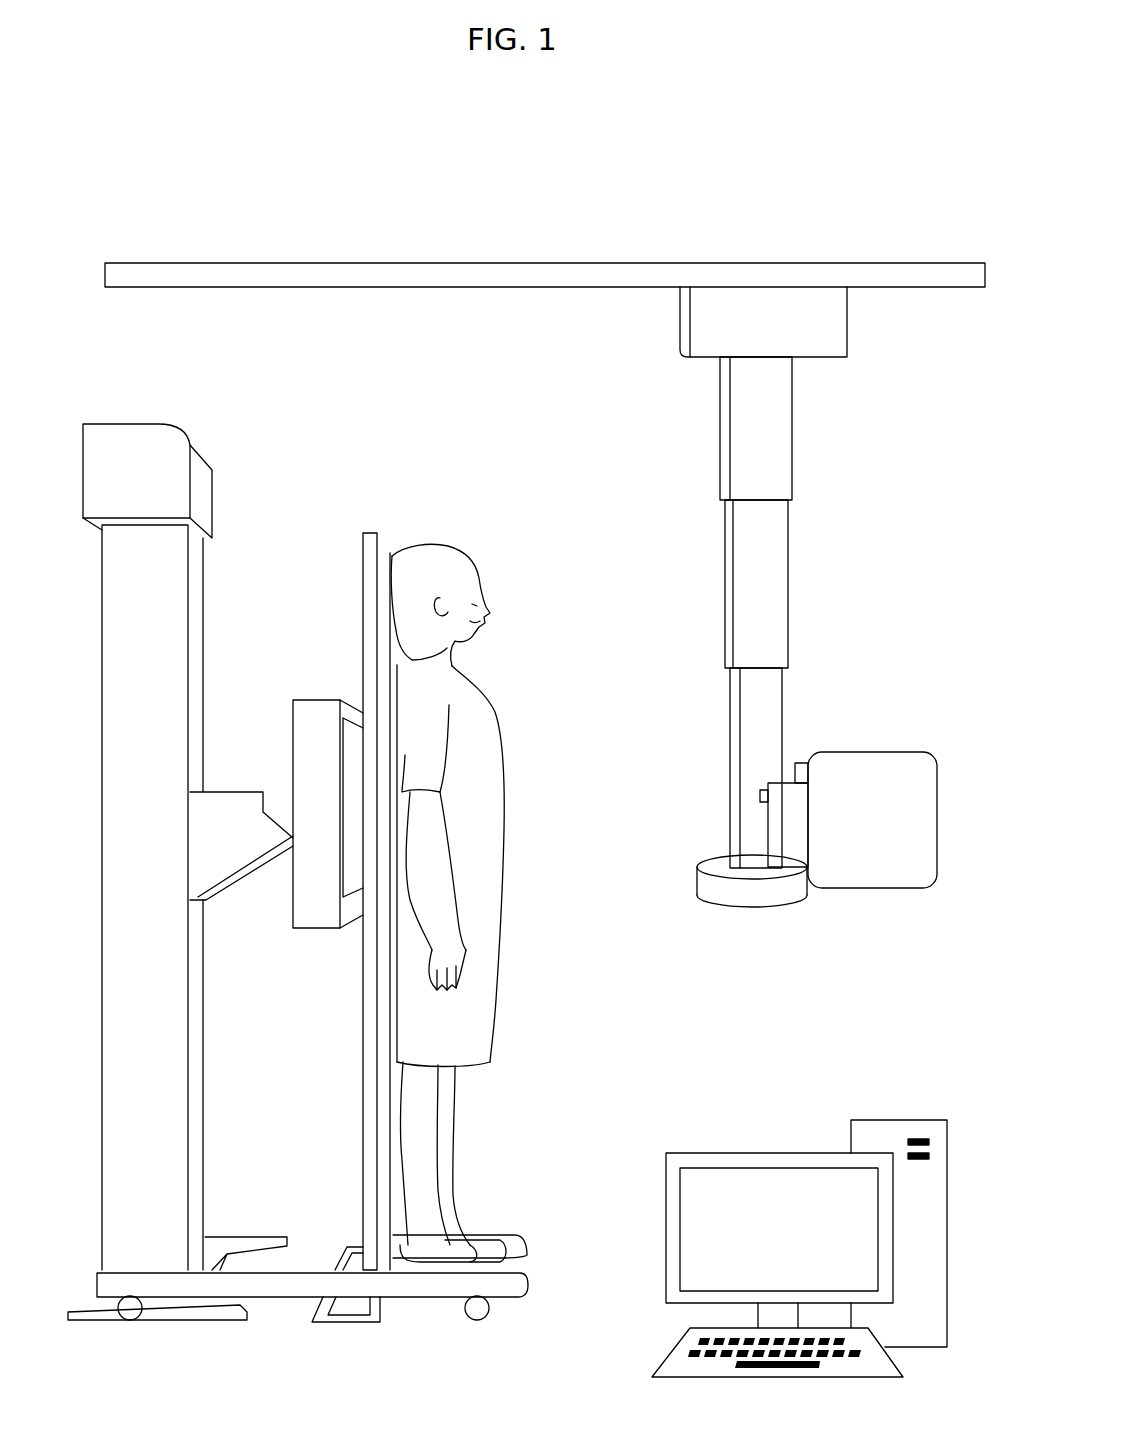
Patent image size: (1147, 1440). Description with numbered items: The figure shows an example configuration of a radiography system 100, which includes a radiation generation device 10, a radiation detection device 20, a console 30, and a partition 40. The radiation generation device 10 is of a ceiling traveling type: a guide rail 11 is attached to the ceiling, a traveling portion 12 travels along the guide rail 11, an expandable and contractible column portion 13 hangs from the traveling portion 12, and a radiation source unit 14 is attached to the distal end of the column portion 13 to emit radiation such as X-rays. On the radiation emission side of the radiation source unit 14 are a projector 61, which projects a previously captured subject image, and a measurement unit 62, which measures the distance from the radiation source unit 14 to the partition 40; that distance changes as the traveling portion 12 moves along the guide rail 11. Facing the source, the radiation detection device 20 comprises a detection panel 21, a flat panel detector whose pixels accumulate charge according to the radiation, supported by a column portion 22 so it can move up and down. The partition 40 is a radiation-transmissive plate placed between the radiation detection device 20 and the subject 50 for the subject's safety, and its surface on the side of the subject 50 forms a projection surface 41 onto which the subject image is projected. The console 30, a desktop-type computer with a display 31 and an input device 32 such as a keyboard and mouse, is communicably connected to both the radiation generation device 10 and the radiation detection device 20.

The radiography system 100 is at (826, 157).
The radiation generation device 10 is at (851, 918).
The guide rail 11 is at (546, 262).
The traveling portion 12 is at (848, 314).
The column portion 13 is at (788, 583).
The radiation source unit 14 is at (868, 752).
The projector 61 is at (760, 793).
The measurement unit 62 is at (800, 763).
The radiation detection device 20 is at (275, 962).
The detection panel 21 is at (318, 698).
The column portion 22 is at (190, 583).
The partition 40 is at (370, 532).
The projection surface 41 is at (392, 563).
The subject 50 is at (440, 547).
The console 30 is at (771, 1128).
The display 31 is at (665, 1230).
The input device 32 is at (680, 1345).